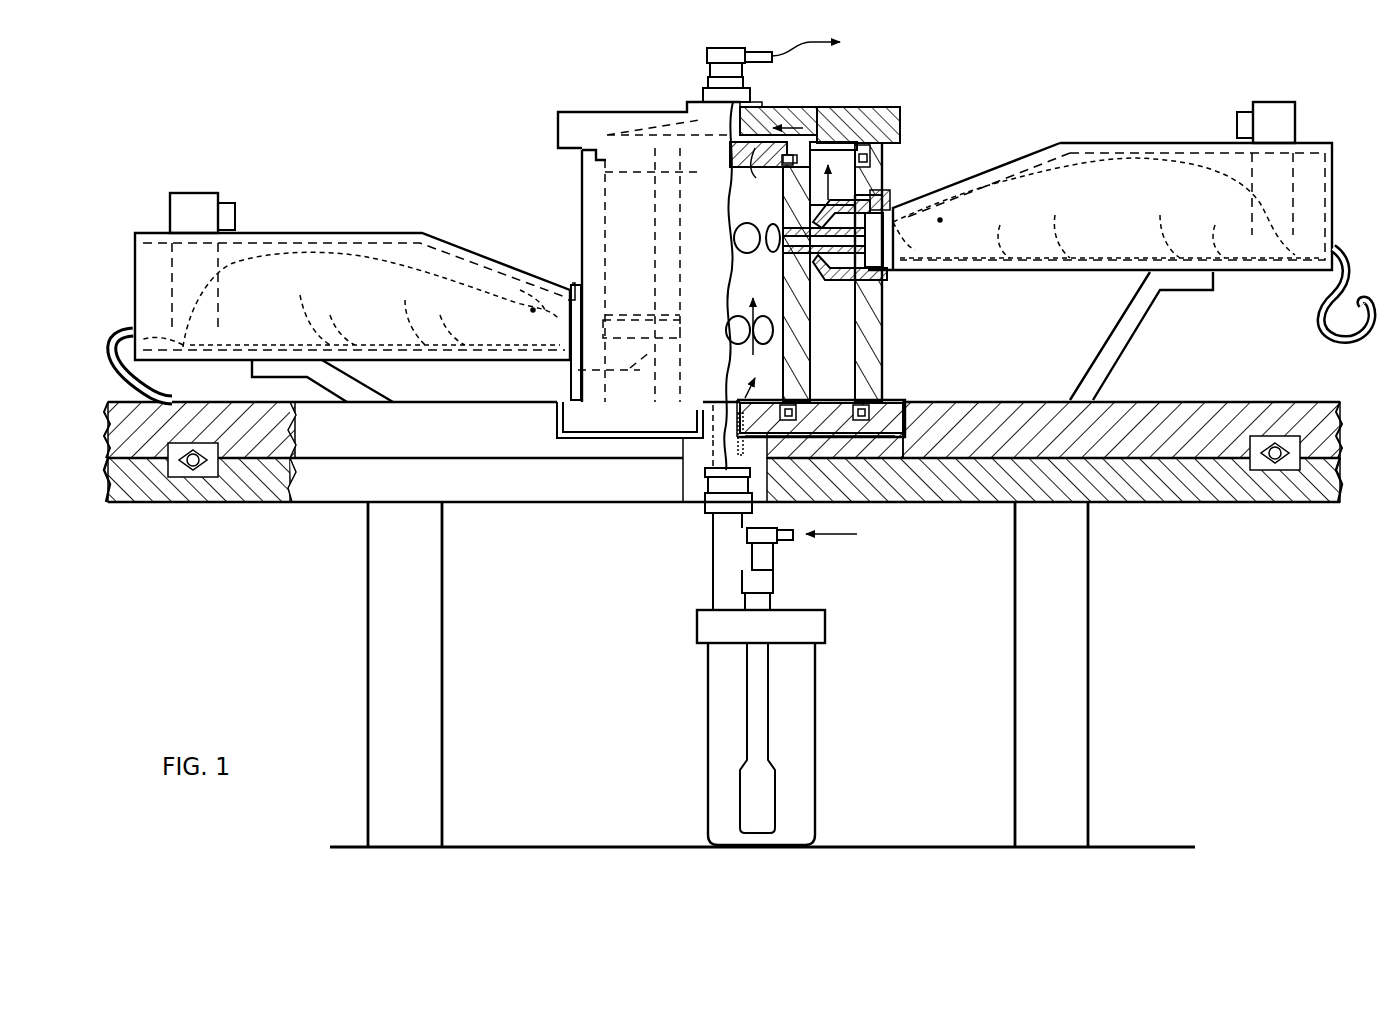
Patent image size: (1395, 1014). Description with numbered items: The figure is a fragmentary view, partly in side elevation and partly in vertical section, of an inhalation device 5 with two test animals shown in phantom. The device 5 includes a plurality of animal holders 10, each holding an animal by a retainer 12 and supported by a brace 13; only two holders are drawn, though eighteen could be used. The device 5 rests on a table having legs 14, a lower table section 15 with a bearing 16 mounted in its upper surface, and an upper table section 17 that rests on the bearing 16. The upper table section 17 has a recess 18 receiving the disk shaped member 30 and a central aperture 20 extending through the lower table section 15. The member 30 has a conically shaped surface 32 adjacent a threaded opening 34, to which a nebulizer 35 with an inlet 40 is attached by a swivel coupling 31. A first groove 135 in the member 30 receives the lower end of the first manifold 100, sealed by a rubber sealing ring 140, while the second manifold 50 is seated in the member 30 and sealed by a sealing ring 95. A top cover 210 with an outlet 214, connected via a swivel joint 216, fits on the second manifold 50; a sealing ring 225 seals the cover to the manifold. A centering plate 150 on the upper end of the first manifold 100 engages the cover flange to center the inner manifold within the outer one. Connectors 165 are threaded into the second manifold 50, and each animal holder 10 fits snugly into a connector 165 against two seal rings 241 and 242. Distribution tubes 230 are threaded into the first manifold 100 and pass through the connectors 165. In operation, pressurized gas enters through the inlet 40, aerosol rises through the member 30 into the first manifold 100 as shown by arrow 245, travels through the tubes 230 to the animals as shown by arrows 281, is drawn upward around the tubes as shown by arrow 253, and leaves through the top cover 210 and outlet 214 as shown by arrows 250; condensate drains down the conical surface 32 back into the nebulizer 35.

The inhalation device 5 is at (497, 170).
The animal holder 10 is at (275, 233).
The retainer 12 is at (192, 195).
The brace 13 is at (358, 392).
The legs 14 is at (430, 627).
The lower table section 15 is at (315, 492).
The bearing 16 is at (185, 478).
The upper table section 17 is at (448, 417).
The recess 18 is at (560, 402).
The central aperture 20 is at (700, 474).
The disk shaped member 30 is at (577, 402).
The swivel coupling 31 is at (750, 505).
The conically shaped surface 32 is at (693, 403).
The threaded opening 34 is at (730, 440).
The nebulizer 35 is at (803, 693).
The inlet 40 is at (785, 542).
The second manifold 50 is at (870, 304).
The sealing ring 95 is at (897, 462).
The first manifold 100 is at (858, 316).
The first groove 135 is at (910, 414).
The sealing ring 140 is at (845, 352).
The centering plate 150 is at (800, 128).
The connector 165 is at (598, 302).
The top cover 210 is at (577, 118).
The outlet 214 is at (705, 70).
The swivel joint 216 is at (709, 66).
The sealing ring 225 is at (873, 148).
The distribution tube 230 is at (620, 310).
The seal ring 241 is at (875, 190).
The seal ring 242 is at (898, 270).
The arrow 245 is at (745, 400).
The arrows 250 is at (752, 107).
The arrow 253 is at (898, 108).
The arrows 281 is at (745, 300).